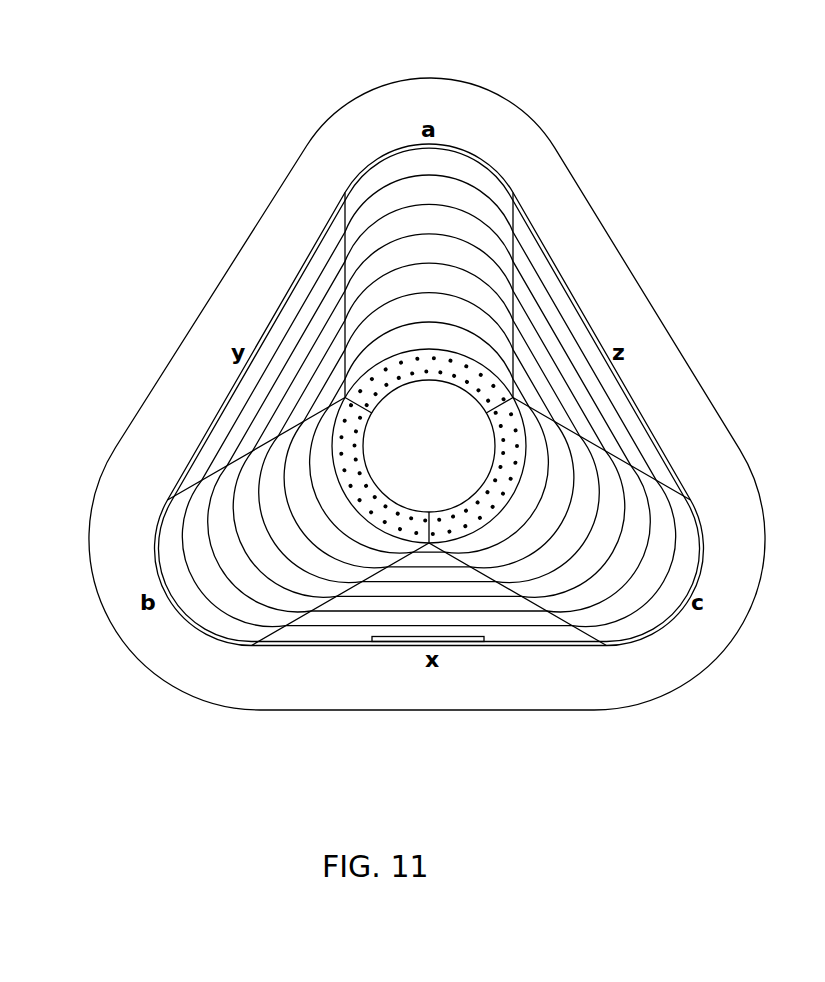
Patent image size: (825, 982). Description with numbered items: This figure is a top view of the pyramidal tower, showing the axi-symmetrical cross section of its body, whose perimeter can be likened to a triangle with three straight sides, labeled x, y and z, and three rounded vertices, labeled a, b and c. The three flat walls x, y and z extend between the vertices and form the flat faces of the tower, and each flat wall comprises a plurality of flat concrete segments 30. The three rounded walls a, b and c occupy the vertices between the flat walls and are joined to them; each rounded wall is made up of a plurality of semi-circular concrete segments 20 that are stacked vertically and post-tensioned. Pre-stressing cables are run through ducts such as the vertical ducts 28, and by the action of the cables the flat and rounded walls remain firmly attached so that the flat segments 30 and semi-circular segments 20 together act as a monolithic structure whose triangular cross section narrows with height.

The semi-circular concrete segment 20 is at (633, 505).
The vertical duct 28 is at (387, 366).
The flat concrete segment 30 is at (632, 447).